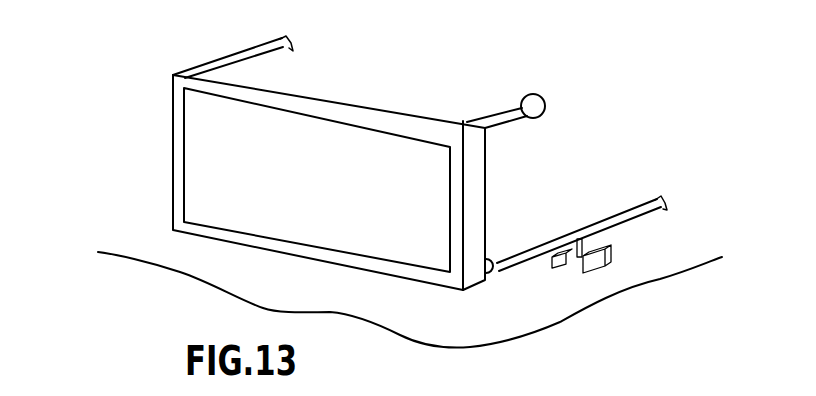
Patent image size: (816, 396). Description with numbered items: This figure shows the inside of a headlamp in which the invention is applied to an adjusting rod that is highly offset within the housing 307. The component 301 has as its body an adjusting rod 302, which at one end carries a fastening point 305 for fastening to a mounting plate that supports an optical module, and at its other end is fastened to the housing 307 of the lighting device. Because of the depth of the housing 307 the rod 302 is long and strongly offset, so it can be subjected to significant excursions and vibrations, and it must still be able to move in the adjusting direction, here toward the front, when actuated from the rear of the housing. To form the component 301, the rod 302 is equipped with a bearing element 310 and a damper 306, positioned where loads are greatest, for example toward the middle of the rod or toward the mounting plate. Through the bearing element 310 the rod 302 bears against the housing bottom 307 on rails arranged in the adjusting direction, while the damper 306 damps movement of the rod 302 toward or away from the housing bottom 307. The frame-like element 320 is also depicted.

The display panel frame 320 is at (172, 172).
The fastening point 305 is at (495, 272).
The adjusting rod 302 is at (557, 240).
The component 301 is at (613, 213).
The bearing element 310 is at (592, 246).
The damper 306 is at (602, 278).
The housing 307 is at (198, 265).